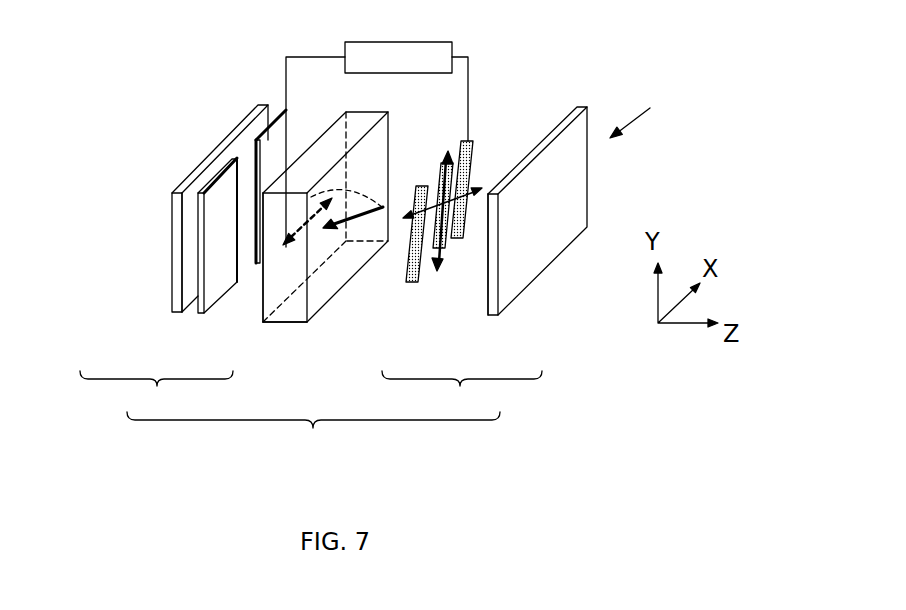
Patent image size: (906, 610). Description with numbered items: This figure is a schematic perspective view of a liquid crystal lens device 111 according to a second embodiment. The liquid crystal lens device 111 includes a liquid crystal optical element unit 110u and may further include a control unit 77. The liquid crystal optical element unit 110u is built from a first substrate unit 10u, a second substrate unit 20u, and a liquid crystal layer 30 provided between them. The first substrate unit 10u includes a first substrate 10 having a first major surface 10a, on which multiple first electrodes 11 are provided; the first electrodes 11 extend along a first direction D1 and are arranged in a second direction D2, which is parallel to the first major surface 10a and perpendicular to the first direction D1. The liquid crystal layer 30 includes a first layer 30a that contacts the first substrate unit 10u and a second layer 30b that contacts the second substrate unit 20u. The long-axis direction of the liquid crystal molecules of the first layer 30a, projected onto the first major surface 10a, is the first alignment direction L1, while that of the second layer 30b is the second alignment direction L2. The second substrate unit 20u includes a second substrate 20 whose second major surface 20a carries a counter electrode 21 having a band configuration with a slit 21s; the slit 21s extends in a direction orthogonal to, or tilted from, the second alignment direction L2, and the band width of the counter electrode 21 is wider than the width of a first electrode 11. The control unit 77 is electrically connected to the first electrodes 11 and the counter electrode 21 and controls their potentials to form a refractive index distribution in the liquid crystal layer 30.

The first substrate 10 is at (495, 316).
The first major surface 10a is at (490, 286).
The first substrate unit 10u is at (462, 396).
The first electrodes 11 is at (415, 283).
The second substrate 20 is at (177, 313).
The second major surface 20a is at (194, 298).
The counter electrode 21 is at (213, 287).
The slit 21s is at (257, 154).
The second substrate unit 20u is at (156, 396).
The liquid crystal layer 30 is at (290, 322).
The first layer 30a is at (307, 322).
The second layer 30b is at (263, 322).
The control unit 77 is at (438, 47).
The liquid crystal optical element unit 110u is at (313, 440).
The liquid crystal lens device 111 is at (657, 109).
The first alignment direction L1 is at (363, 207).
The second alignment direction L2 is at (313, 205).
The first direction D1 is at (449, 183).
The second direction D2 is at (453, 188).